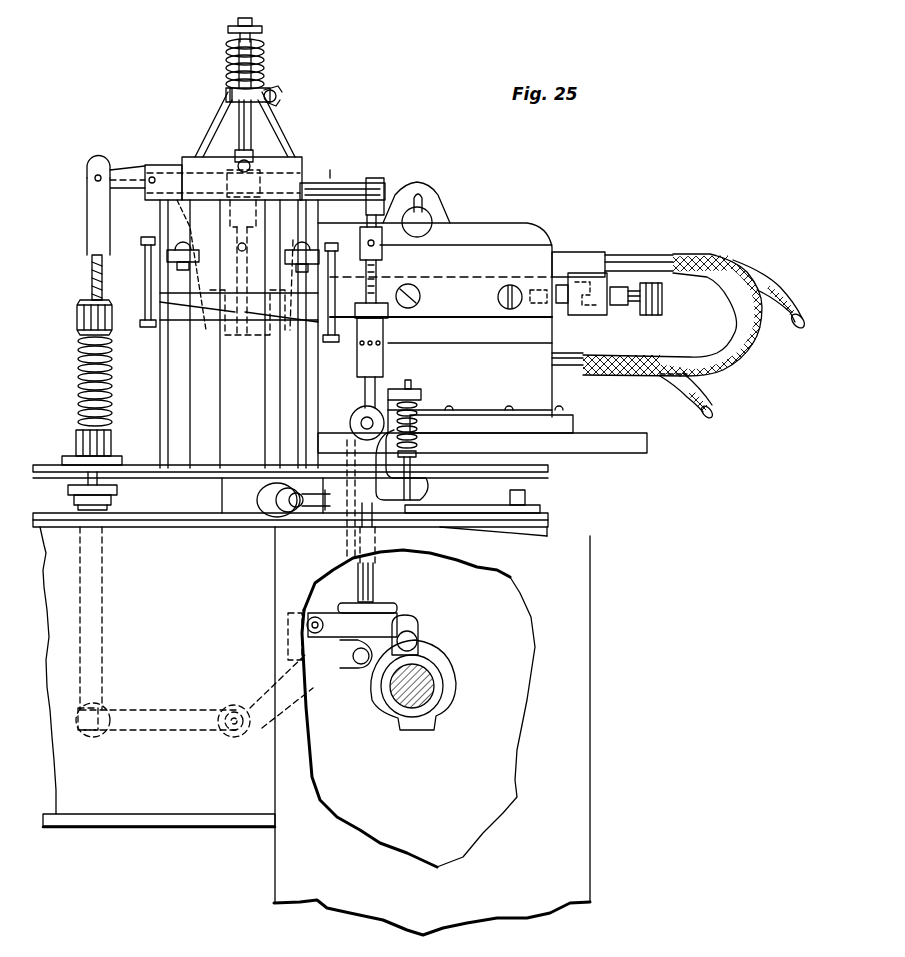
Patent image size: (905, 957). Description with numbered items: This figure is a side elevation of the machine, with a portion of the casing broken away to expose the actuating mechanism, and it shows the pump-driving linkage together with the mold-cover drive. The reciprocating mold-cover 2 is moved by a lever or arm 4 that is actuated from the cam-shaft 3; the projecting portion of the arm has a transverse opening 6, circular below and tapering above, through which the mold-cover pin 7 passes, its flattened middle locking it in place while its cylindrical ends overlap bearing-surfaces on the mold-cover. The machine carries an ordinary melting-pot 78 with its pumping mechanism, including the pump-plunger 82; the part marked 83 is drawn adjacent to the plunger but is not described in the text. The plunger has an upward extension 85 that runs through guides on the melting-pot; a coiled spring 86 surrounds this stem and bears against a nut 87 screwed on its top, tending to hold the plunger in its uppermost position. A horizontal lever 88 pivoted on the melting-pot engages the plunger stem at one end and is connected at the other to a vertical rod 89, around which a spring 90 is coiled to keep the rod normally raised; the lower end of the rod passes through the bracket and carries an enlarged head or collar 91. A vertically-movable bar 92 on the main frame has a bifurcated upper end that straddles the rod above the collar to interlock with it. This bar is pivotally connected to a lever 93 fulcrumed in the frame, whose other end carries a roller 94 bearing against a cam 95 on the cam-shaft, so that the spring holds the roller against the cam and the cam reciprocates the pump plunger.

The mold-cover 2 is at (497, 237).
The cam-shaft 3 is at (434, 686).
The lever or arm 4 is at (413, 180).
The transverse opening 6 is at (419, 198).
The mold-cover pin 7 is at (422, 222).
The melting-pot 78 is at (202, 230).
The pump-plunger 82 is at (247, 287).
The guide bar 83 is at (244, 250).
The upward extension 85 is at (252, 118).
The coiled spring 86 is at (265, 67).
The nut 87 is at (226, 30).
The horizontal lever 88 is at (120, 160).
The vertical rod 89 is at (90, 276).
The spring 90 is at (80, 392).
The enlarged head or collar 91 is at (78, 497).
The vertically-movable bar 92 is at (90, 635).
The lever 93 is at (310, 638).
The roller 94 is at (354, 668).
The cam 95 is at (377, 688).